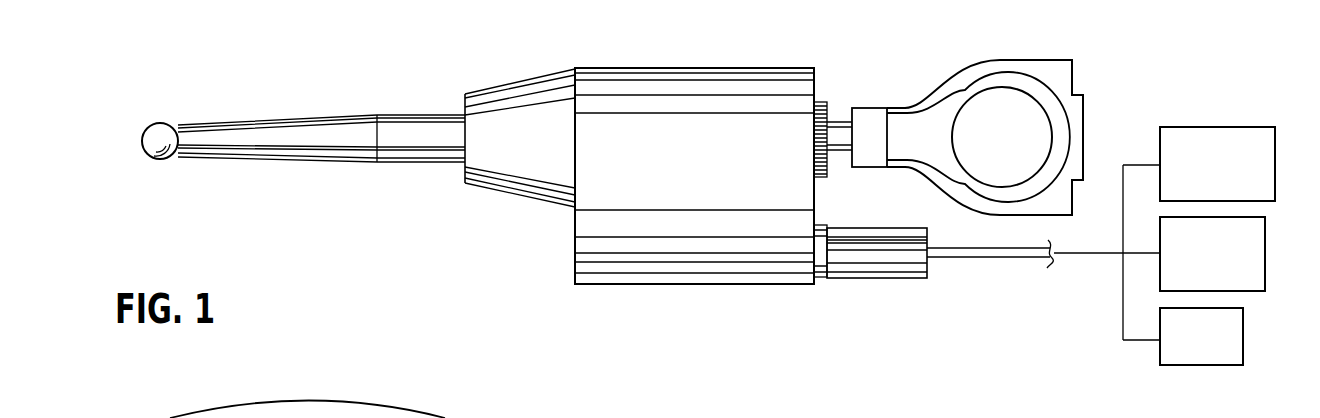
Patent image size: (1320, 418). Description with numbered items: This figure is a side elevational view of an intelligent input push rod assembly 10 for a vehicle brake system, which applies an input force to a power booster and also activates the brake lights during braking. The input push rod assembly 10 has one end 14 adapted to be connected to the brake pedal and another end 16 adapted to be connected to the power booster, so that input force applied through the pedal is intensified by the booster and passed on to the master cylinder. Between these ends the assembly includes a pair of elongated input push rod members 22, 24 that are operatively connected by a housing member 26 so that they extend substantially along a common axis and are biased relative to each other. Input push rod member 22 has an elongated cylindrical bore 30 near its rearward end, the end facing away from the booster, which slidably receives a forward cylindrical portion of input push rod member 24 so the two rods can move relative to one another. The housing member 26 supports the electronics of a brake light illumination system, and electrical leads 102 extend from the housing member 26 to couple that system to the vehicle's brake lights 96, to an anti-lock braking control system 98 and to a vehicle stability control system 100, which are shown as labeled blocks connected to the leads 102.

The input push rod assembly 10 is at (986, 371).
The one end 14 is at (1072, 74).
The another end 16 is at (162, 122).
The input push rod member 22 is at (308, 162).
The input push rod member 24 is at (835, 117).
The housing member 26 is at (606, 288).
The elongated cylindrical bore 30 is at (492, 417).
The brake lights 96 is at (1243, 347).
The anti-lock braking control system 98 is at (1265, 252).
The vehicle stability control system 100 is at (1275, 155).
The electrical leads 102 is at (1018, 260).